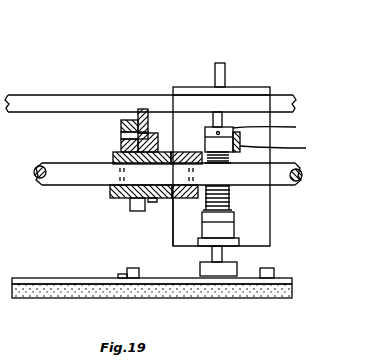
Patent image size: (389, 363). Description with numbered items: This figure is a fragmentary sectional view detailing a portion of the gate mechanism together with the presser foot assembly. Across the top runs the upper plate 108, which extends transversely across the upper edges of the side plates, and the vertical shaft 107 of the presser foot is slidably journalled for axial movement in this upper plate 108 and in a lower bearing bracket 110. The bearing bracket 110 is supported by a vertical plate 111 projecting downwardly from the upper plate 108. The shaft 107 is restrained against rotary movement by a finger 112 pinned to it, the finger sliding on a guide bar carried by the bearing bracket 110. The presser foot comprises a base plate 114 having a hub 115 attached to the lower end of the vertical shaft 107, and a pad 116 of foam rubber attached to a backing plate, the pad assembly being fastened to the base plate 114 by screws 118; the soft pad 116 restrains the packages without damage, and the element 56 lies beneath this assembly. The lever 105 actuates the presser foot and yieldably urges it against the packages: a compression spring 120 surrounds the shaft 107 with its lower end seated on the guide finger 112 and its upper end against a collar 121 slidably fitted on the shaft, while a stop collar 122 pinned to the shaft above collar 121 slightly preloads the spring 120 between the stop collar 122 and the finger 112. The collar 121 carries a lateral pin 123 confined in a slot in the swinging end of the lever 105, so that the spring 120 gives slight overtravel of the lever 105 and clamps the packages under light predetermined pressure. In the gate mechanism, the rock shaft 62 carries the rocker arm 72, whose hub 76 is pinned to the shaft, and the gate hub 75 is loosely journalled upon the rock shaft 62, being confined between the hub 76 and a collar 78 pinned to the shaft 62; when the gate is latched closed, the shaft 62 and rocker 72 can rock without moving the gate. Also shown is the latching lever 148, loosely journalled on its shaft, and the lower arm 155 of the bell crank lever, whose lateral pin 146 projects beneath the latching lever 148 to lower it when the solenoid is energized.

The base 56 is at (45, 270).
The rock shaft 62 is at (52, 175).
The rocker arm 72 is at (135, 211).
The hub 75 is at (158, 204).
The hub 76 is at (124, 198).
The collar 78 is at (186, 200).
The lever 105 is at (240, 140).
The vertical shaft 107 is at (225, 68).
The upper plate 108 is at (50, 100).
The bearing bracket 110 is at (239, 242).
The vertical plate 111 is at (262, 207).
The finger 112 is at (228, 222).
The base plate 114 is at (116, 270).
The hub 115 is at (198, 268).
The pad 116 is at (292, 292).
The screws 118 is at (274, 270).
The compression spring 120 is at (231, 160).
The collar 121 is at (205, 140).
The stop collar 122 is at (278, 126).
The lateral pin 123 is at (286, 147).
The lateral pin 146 is at (121, 134).
The latching lever 148 is at (153, 110).
The lower arm 155 is at (126, 120).